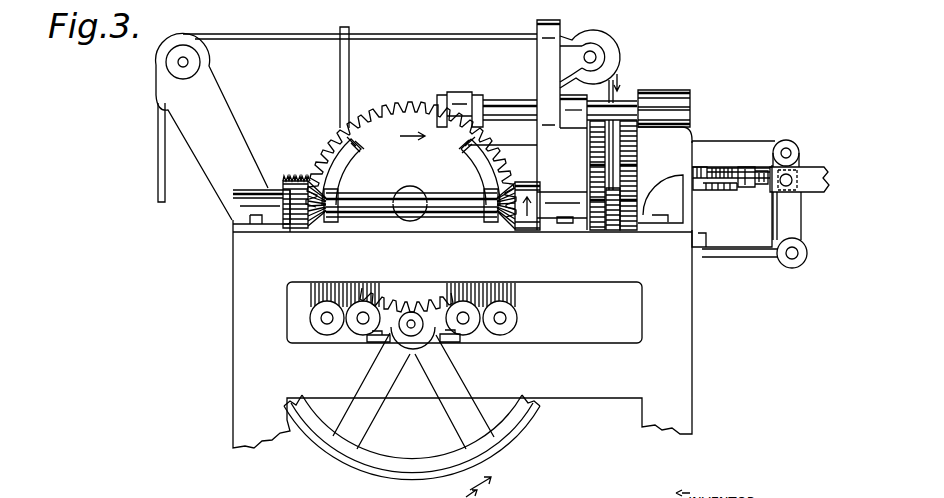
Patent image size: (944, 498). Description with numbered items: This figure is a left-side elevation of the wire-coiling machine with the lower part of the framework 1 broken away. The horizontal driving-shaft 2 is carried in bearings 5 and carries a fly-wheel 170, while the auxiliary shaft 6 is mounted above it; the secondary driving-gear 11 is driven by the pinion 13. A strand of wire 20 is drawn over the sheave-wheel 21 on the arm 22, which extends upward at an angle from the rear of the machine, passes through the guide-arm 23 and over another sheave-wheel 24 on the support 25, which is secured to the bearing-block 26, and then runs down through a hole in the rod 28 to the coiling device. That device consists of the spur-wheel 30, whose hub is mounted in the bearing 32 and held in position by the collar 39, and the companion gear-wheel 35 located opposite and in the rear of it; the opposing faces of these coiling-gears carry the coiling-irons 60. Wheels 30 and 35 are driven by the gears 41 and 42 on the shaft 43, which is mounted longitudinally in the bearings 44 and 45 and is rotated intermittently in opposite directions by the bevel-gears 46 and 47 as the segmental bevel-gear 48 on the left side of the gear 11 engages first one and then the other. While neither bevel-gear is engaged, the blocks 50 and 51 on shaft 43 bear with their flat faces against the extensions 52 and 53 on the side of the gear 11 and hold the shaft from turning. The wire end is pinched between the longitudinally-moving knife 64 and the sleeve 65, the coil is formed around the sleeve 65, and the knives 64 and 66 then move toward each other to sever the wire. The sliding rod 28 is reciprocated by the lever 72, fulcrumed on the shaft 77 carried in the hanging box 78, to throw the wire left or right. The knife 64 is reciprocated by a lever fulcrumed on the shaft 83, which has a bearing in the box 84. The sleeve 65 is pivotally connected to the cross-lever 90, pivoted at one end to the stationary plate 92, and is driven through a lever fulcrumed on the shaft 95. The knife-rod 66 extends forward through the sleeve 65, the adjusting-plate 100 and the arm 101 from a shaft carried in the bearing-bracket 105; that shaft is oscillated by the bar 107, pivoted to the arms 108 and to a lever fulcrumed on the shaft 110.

The framework 1 is at (462, 319).
The driving-shaft 2 is at (413, 330).
The bearings 5 is at (447, 342).
The auxiliary shaft 6 is at (409, 221).
The secondary driving-gear 11 is at (414, 159).
The pinion 13 is at (402, 313).
The strand of wire 20 is at (428, 34).
The sheave-wheel 21 is at (203, 60).
The arm 22 is at (212, 126).
The guide-arm 23 is at (339, 81).
The sheave-wheel 24 is at (620, 44).
The support 25 is at (551, 24).
The bearing-block 26 is at (562, 162).
The rod 28 is at (499, 108).
The spur-wheel 30 is at (628, 122).
The bearing 32 is at (690, 102).
The companion gear-wheel 35 is at (594, 139).
The collar 39 is at (701, 192).
The gear 41 is at (630, 230).
The gear 42 is at (606, 230).
The shaft 43 is at (464, 219).
The bearing 44 is at (562, 230).
The bearing 45 is at (252, 225).
The bevel-gear 46 is at (528, 230).
The bevel-gear 47 is at (300, 229).
The segmental bevel-gear 48 is at (411, 207).
The block 50 is at (494, 223).
The block 51 is at (331, 223).
The extension 52 is at (343, 176).
The extension 53 is at (474, 178).
The coiling-irons 60 is at (597, 176).
The knife 64 is at (294, 176).
The sleeve 65 is at (704, 167).
The knife-rod 66 is at (763, 188).
The lever 72 is at (462, 94).
The shaft 77 is at (469, 323).
The hanging box 78 is at (520, 297).
The shaft 83 is at (326, 319).
The box 84 is at (312, 294).
The cross-lever 90 is at (727, 168).
The stationary plate 92 is at (690, 218).
The shaft 95 is at (503, 318).
The adjusting-plate 100 is at (817, 170).
The arm 101 is at (796, 212).
The bearing-bracket 105 is at (777, 270).
The bar 107 is at (510, 151).
The arms 108 is at (796, 144).
The shaft 110 is at (366, 337).
The fly-wheel 170 is at (376, 460).